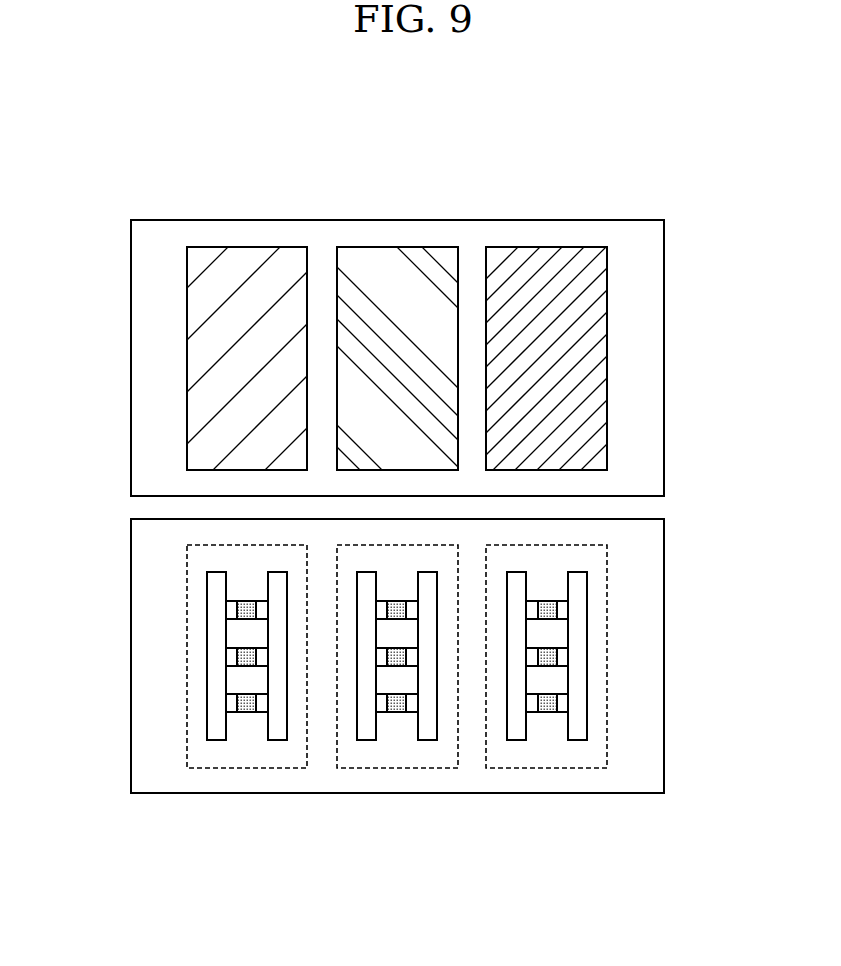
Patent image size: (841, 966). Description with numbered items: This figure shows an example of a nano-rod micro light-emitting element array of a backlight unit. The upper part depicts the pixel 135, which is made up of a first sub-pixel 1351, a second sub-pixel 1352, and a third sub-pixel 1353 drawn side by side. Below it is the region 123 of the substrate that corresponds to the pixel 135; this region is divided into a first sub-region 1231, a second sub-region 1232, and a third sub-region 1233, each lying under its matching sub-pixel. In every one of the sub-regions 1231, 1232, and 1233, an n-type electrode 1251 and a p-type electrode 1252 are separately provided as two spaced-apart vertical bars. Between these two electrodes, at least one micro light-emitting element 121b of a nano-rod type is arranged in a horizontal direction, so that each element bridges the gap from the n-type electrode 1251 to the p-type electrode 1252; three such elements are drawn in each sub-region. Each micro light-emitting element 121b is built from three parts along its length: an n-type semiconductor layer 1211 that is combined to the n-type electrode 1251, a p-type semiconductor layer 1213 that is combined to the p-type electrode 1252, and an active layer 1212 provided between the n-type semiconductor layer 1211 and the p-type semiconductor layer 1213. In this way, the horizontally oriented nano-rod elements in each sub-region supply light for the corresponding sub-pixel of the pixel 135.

The pixel 135 is at (658, 357).
The first sub-pixel 1351 is at (249, 262).
The second sub-pixel 1352 is at (400, 262).
The third sub-pixel 1353 is at (550, 262).
The region of the substrate 123 is at (131, 568).
The first sub-region 1231 is at (209, 729).
The second sub-region 1232 is at (395, 768).
The third sub-region 1233 is at (545, 768).
The n-type electrode 1251 is at (208, 607).
The p-type electrode 1252 is at (276, 573).
The n-type semiconductor layer 1211 is at (232, 712).
The active layer 1212 is at (245, 712).
The p-type semiconductor layer 1213 is at (262, 712).
The micro light-emitting element of a nano-rod type 121b is at (297, 826).